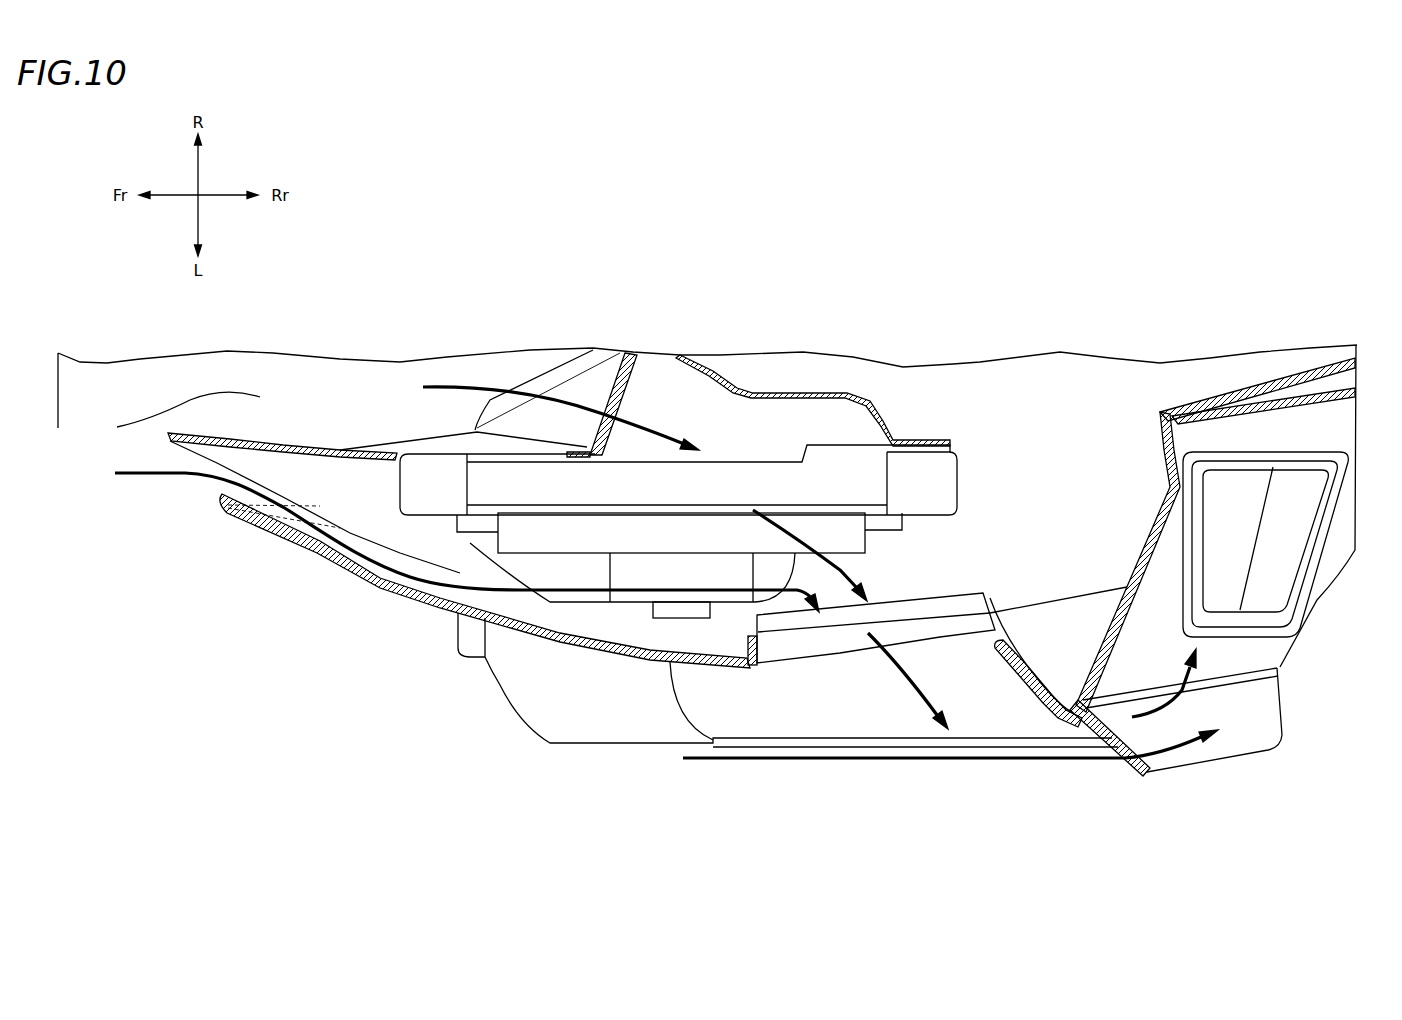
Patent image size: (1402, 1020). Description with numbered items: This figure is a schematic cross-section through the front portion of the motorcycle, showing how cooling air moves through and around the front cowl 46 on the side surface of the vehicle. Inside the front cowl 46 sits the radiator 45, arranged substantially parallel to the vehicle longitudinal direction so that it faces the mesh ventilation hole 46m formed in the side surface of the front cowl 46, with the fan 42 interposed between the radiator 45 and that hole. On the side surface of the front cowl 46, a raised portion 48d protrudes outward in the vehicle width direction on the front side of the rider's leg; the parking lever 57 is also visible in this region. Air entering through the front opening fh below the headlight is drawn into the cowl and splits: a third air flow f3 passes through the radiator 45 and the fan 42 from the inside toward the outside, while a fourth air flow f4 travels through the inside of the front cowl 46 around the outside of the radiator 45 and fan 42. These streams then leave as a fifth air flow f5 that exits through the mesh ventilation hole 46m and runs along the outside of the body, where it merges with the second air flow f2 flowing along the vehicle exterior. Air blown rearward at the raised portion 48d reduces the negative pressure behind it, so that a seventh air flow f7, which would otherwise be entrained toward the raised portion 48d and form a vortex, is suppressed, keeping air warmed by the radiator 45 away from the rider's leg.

The fan 42 is at (637, 533).
The radiator 45 is at (488, 487).
The front cowl 46 is at (280, 547).
The mesh ventilation hole 46m is at (803, 620).
The raised portion 48d is at (1273, 642).
The parking lever 57 is at (1232, 542).
The front opening fh is at (176, 413).
The second air flow f2 is at (1170, 740).
The third air flow f3 is at (470, 383).
The fourth air flow f4 is at (362, 560).
The fifth air flow f5 is at (910, 683).
The seventh air flow f7 is at (1160, 710).